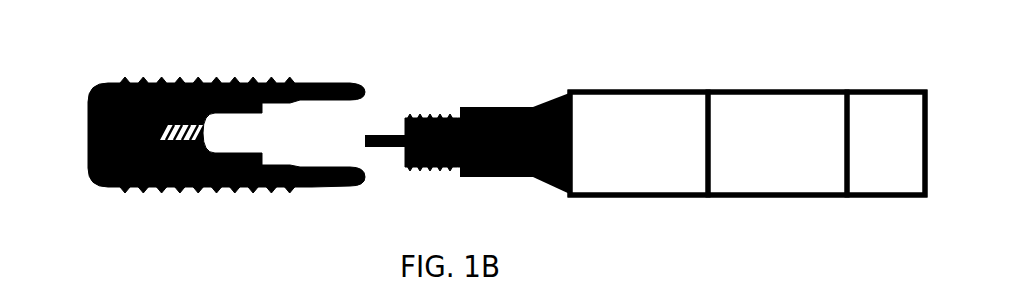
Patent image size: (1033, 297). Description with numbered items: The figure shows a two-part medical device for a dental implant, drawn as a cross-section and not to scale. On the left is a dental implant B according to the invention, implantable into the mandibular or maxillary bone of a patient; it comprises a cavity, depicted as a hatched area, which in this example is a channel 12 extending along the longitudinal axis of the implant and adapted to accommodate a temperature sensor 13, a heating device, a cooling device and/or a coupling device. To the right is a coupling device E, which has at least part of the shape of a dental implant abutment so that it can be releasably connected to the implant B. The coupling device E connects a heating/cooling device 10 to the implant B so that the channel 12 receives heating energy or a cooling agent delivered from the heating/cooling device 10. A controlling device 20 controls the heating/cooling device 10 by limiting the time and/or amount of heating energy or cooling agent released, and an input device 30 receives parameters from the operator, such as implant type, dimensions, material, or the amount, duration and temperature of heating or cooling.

The dental implant B is at (100, 174).
The coupling device E is at (533, 177).
The channel 12 is at (203, 133).
The temperature sensor 13 is at (382, 135).
The heating/cooling device 10 is at (639, 143).
The controlling device 20 is at (777, 143).
The input device 30 is at (886, 143).